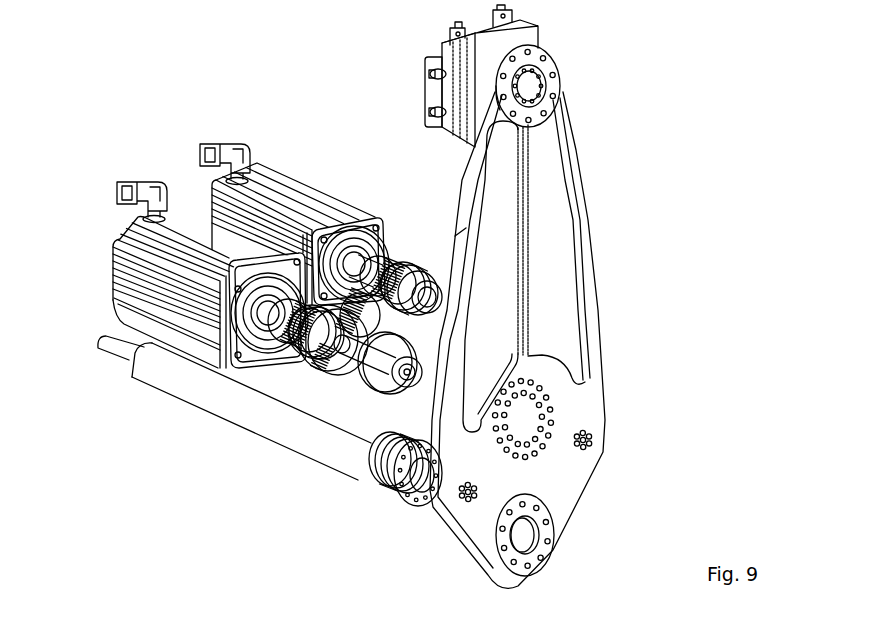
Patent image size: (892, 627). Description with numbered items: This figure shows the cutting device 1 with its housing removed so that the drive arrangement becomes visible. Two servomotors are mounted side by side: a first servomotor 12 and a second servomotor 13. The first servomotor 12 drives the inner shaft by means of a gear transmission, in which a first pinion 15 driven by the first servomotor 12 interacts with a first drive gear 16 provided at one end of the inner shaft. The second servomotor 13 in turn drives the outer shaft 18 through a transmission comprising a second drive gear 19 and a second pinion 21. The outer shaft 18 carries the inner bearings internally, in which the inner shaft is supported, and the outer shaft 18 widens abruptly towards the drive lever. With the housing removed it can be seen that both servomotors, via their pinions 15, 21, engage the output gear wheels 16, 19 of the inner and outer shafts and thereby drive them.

The cutting device 1 is at (697, 115).
The first servomotor 12 is at (277, 188).
The second servomotor 13 is at (147, 290).
The first pinion 15 is at (397, 283).
The first drive gear 16 is at (380, 293).
The outer shaft 18 is at (413, 387).
The second drive gear 19 is at (357, 258).
The second pinion 21 is at (290, 347).